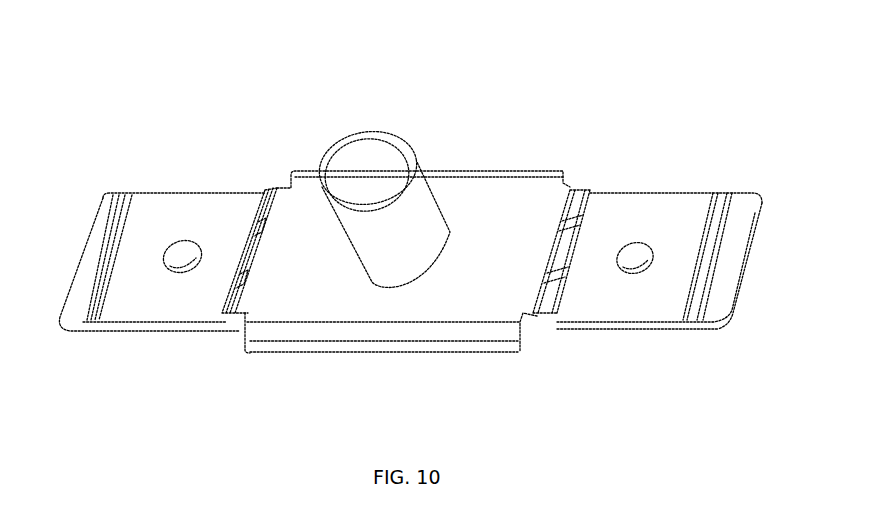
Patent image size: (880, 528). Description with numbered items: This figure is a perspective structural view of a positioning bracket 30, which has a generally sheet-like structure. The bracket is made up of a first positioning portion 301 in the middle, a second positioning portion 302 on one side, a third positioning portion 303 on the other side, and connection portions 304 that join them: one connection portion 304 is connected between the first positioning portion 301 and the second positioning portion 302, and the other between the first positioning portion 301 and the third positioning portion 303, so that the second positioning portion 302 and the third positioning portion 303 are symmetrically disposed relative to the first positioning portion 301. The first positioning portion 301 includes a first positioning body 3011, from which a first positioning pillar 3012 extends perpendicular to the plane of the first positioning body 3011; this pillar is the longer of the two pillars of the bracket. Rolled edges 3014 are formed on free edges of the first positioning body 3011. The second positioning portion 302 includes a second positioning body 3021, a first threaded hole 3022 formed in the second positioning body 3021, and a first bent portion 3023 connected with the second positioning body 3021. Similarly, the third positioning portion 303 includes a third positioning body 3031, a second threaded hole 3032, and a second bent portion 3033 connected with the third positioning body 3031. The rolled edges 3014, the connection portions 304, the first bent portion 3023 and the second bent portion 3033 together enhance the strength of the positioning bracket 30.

The positioning bracket 30 is at (340, 55).
The first positioning portion 301 is at (487, 204).
The first positioning body 3011 is at (513, 228).
The first positioning pillar 3012 is at (362, 165).
The rolled edges 3014 is at (480, 333).
The second positioning portion 302 is at (187, 213).
The second positioning body 3021 is at (152, 231).
The first threaded hole 3022 is at (180, 270).
The first bent portion 3023 is at (101, 228).
The third positioning portion 303 is at (663, 228).
The third positioning body 3031 is at (687, 254).
The second threaded hole 3032 is at (635, 272).
The second bent portion 3033 is at (726, 274).
The connection portions 304 is at (255, 210).